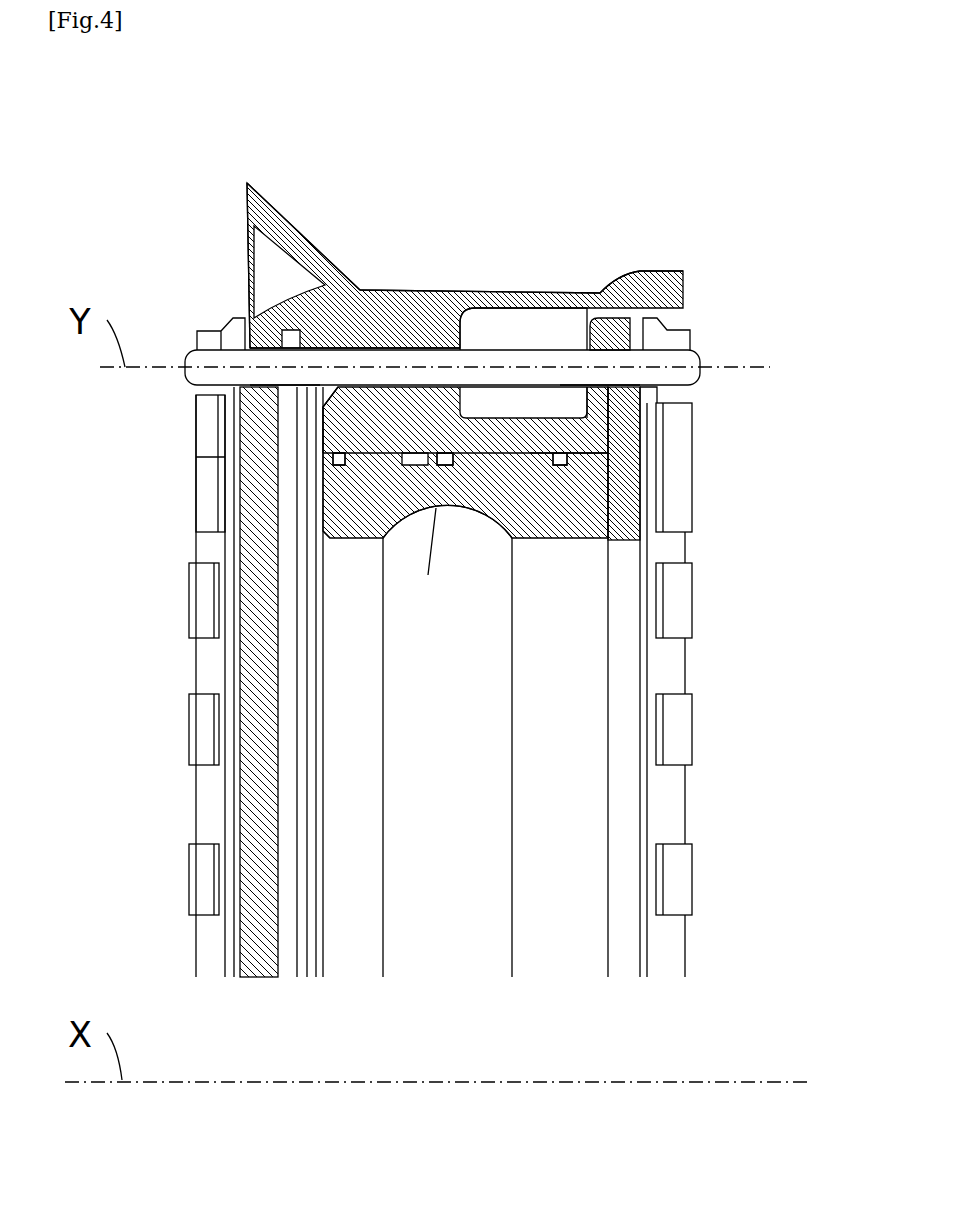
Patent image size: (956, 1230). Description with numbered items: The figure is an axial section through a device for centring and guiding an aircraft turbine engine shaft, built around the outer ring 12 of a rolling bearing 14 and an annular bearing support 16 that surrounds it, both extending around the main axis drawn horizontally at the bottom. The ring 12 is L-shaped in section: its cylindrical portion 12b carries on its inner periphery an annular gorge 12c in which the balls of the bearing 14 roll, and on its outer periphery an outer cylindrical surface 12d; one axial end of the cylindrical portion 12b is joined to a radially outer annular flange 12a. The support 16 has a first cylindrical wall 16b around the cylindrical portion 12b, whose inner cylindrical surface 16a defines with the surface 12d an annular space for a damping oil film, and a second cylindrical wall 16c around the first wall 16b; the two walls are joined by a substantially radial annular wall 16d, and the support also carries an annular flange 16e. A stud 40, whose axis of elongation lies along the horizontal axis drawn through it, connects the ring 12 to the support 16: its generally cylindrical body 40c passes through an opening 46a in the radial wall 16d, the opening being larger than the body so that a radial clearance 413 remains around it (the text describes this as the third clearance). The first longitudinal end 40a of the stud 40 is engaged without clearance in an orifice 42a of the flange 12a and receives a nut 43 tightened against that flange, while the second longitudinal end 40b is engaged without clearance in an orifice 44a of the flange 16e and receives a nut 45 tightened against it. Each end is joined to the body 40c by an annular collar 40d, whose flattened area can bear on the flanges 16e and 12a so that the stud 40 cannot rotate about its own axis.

The outer ring 12 is at (553, 952).
The rolling bearing 14 is at (553, 952).
The radially outer annular flange 12a is at (630, 425).
The cylindrical portion 12b is at (350, 512).
The annular gorge 12c is at (437, 508).
The outer cylindrical surface 12d is at (497, 387).
The annular bearing support 16 is at (305, 225).
The inner cylindrical surface 16a is at (437, 445).
The first cylindrical wall 16b is at (547, 433).
The second cylindrical wall 16c is at (378, 343).
The radial annular wall 16d is at (288, 218).
The annular flange 16e is at (265, 945).
The stud 40 is at (532, 332).
The first longitudinal end 40a is at (682, 348).
The second longitudinal end 40b is at (197, 332).
The body 40c is at (502, 352).
The annular collar 40d is at (292, 392).
The orifice 42a is at (626, 350).
The nut 43 is at (680, 397).
The orifice 44a is at (251, 345).
The nut 45 is at (225, 397).
The opening 46a is at (378, 343).
The chamfered portion 413 is at (360, 407).